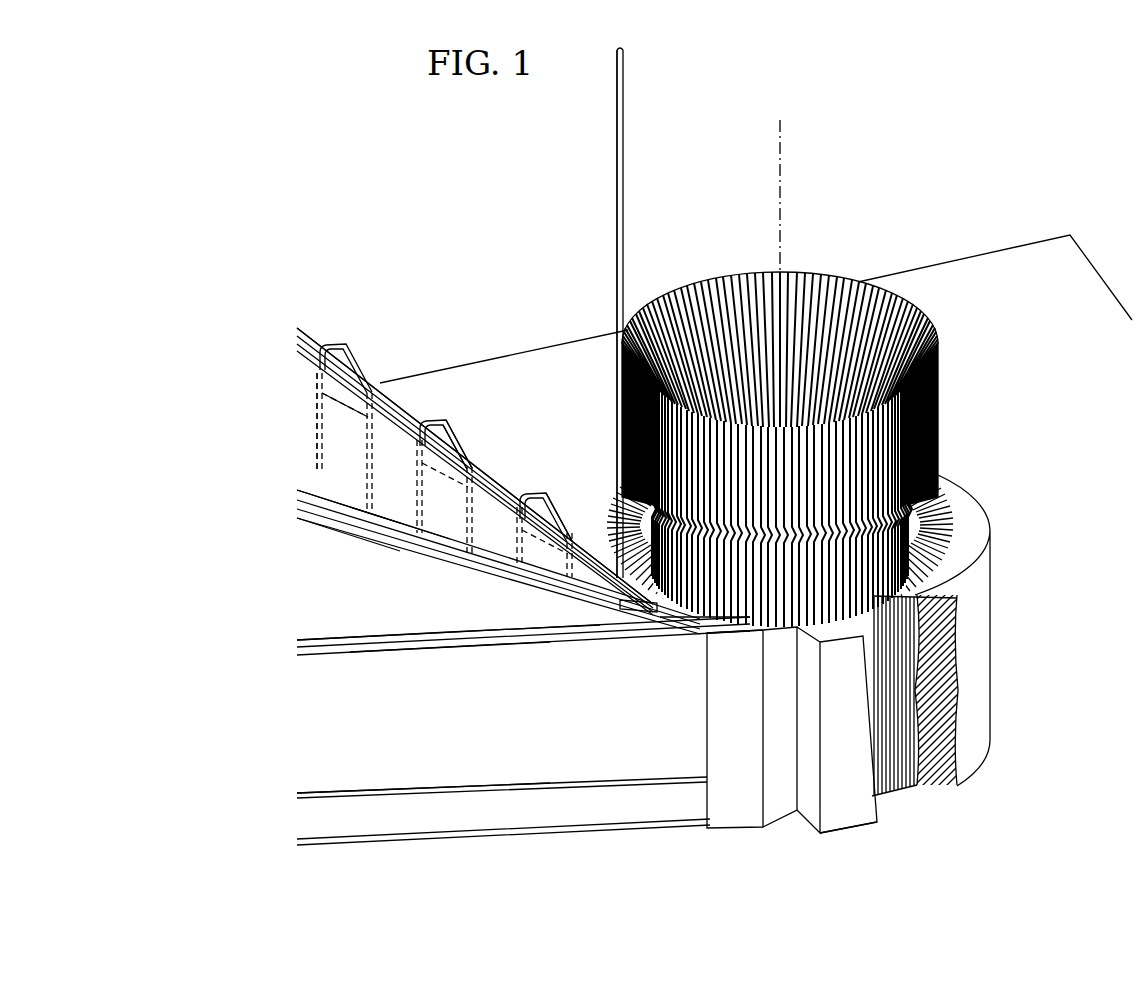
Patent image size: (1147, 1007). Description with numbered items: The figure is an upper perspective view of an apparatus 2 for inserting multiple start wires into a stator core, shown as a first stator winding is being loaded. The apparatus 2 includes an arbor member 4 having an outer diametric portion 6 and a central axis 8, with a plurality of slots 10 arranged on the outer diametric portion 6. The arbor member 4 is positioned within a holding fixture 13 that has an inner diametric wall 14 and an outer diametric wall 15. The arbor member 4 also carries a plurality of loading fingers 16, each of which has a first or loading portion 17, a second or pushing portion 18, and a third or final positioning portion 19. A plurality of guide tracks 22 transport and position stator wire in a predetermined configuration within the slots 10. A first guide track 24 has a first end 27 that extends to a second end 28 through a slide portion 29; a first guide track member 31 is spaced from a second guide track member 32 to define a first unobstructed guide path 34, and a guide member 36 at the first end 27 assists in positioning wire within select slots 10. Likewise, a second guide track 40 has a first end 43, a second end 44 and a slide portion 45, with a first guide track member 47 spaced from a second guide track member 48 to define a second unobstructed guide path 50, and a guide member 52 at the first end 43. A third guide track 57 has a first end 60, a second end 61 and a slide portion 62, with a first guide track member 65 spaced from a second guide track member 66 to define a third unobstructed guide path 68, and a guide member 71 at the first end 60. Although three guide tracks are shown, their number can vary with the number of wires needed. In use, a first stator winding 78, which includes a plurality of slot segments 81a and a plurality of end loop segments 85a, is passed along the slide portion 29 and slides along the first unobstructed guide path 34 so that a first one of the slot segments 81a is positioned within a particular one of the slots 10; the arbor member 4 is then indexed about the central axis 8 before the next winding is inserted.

The apparatus 2 is at (1027, 803).
The arbor member 4 is at (907, 803).
The outer diametric portion 6 is at (917, 605).
The central axis 8 is at (787, 157).
The slots 10 is at (902, 627).
The holding fixture 13 is at (855, 824).
The inner diametric wall 14 is at (818, 634).
The outer diametric wall 15 is at (992, 545).
The loading fingers 16 is at (959, 345).
The first or loading portion 17 is at (947, 517).
The second or pushing portion 18 is at (957, 465).
The third or final positioning portion 19 is at (939, 425).
The guide tracks 22 is at (330, 194).
The first guide track 24 is at (431, 381).
The first end 27 is at (578, 524).
The second end 28 is at (296, 304).
The slide portion 29 is at (397, 381).
The first guide track member 31 is at (482, 458).
The second guide track member 32 is at (391, 446).
The first unobstructed guide path 34 is at (475, 451).
The guide member 36 is at (584, 527).
The second guide track 40 is at (388, 612).
The first end 43 is at (598, 610).
The second end 44 is at (306, 550).
The slide portion 45 is at (382, 570).
The first guide track member 47 is at (323, 516).
The second guide track member 48 is at (467, 604).
The second unobstructed guide path 50 is at (392, 530).
The guide member 52 is at (668, 614).
The third guide track 57 is at (604, 707).
The first end 60 is at (689, 655).
The second end 61 is at (305, 674).
The slide portion 62 is at (381, 741).
The first guide track member 65 is at (361, 632).
The second guide track member 66 is at (423, 710).
The third unobstructed guide path 68 is at (291, 637).
The guide member 71 is at (775, 631).
The first stator winding 78 is at (638, 138).
The slot segments 81a is at (617, 99).
The end loop segments 85a is at (430, 390).